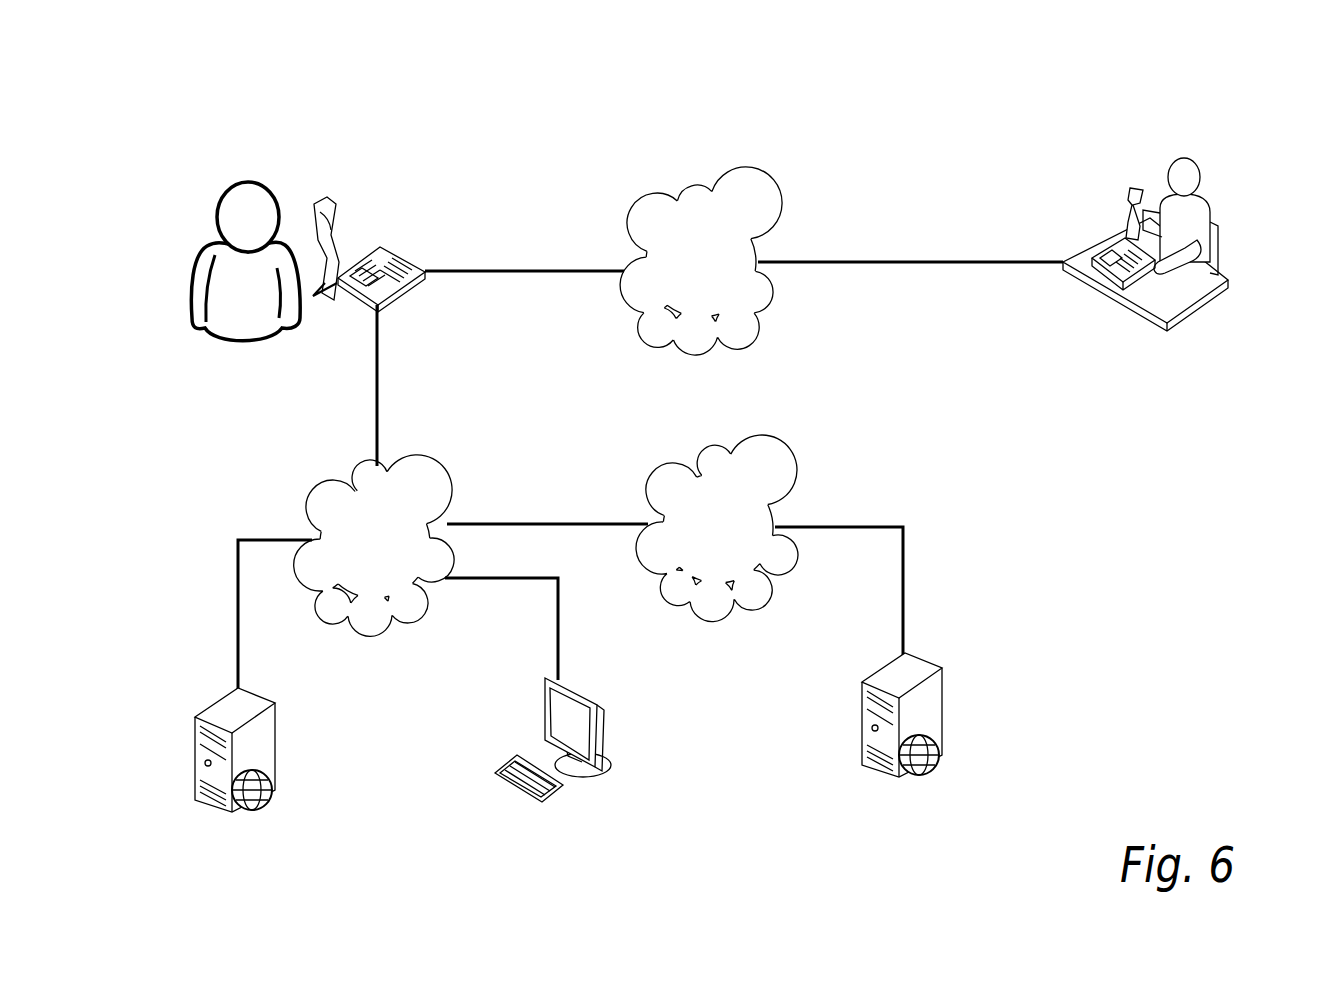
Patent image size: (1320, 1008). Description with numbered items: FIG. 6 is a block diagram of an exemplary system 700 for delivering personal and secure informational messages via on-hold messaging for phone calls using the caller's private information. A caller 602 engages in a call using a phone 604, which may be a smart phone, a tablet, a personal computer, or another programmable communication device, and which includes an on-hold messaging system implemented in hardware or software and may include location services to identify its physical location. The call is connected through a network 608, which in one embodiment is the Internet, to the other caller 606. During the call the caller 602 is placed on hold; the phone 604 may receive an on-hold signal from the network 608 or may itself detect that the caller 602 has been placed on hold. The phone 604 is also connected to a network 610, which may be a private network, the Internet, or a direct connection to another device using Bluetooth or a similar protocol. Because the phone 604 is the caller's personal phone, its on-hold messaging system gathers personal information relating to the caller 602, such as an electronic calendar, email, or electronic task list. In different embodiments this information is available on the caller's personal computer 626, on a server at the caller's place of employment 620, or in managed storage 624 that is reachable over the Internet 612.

The communication system 700 is at (1139, 61).
The caller 602 is at (232, 185).
The phone 604 is at (340, 205).
The caller 606 is at (1198, 166).
The network 608 is at (701, 261).
The network 610 is at (374, 545).
The Internet 612 is at (717, 528).
The server at the caller's place of employment 620 is at (262, 695).
The managed storage 624 is at (930, 664).
The personal computer 626 is at (597, 702).